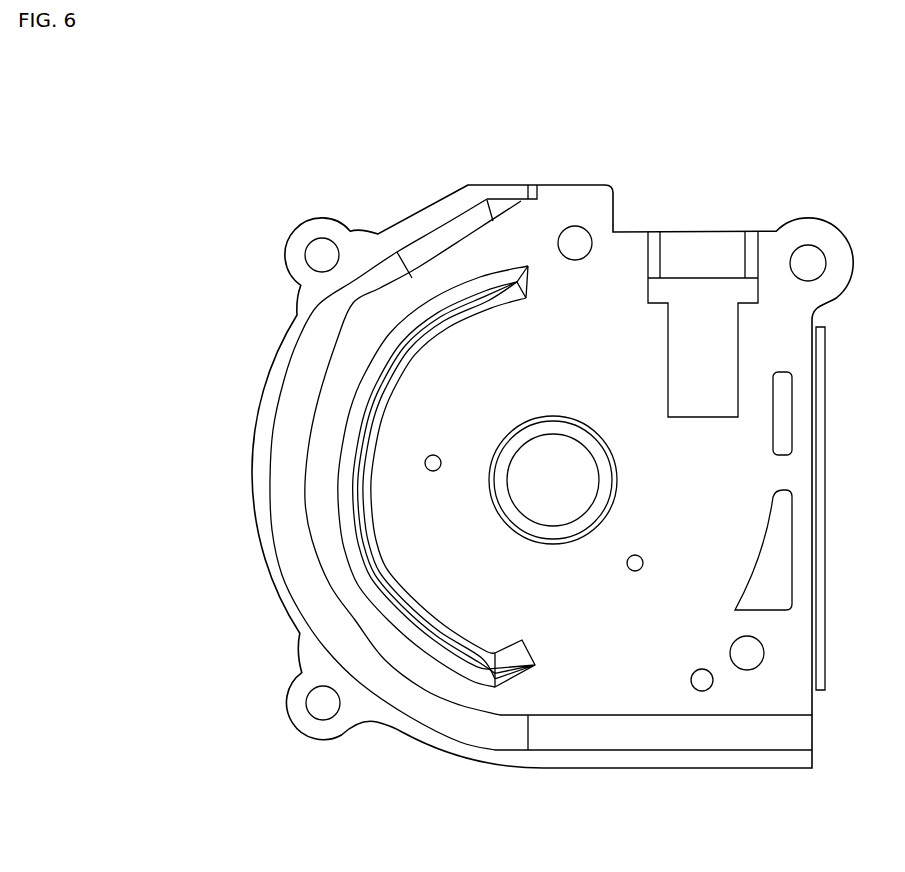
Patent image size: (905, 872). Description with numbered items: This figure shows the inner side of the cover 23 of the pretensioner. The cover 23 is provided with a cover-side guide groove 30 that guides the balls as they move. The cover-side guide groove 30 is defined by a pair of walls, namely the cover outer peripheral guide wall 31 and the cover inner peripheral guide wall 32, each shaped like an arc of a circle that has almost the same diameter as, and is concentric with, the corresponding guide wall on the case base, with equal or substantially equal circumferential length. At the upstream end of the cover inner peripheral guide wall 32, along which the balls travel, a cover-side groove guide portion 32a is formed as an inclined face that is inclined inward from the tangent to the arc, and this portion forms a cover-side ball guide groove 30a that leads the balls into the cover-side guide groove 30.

The cover 23 is at (411, 141).
The cover-side guide groove 30 is at (332, 412).
The cover-side ball guide groove 30a is at (512, 703).
The cover outer peripheral guide wall 31 is at (283, 487).
The cover inner peripheral guide wall 32 is at (383, 575).
The cover-side groove guide portion 32a is at (522, 675).